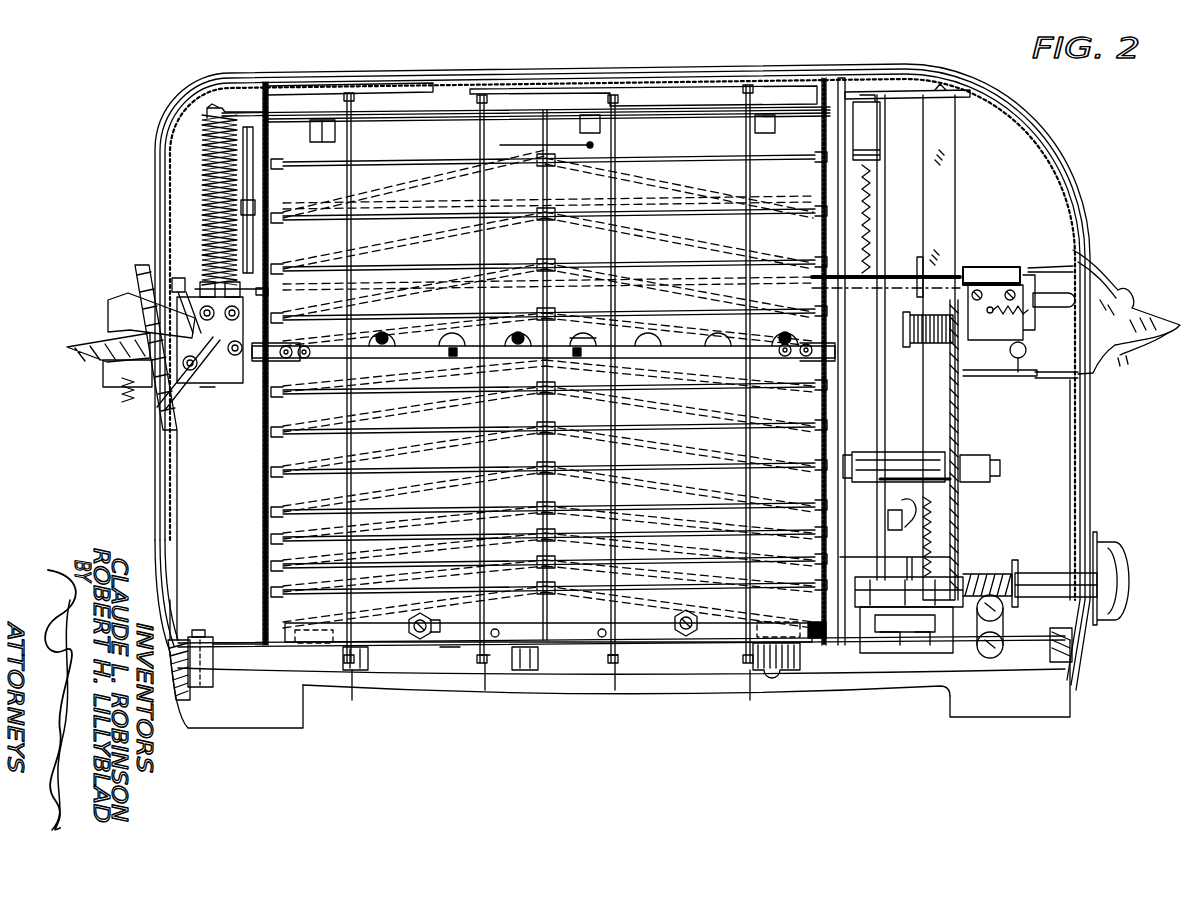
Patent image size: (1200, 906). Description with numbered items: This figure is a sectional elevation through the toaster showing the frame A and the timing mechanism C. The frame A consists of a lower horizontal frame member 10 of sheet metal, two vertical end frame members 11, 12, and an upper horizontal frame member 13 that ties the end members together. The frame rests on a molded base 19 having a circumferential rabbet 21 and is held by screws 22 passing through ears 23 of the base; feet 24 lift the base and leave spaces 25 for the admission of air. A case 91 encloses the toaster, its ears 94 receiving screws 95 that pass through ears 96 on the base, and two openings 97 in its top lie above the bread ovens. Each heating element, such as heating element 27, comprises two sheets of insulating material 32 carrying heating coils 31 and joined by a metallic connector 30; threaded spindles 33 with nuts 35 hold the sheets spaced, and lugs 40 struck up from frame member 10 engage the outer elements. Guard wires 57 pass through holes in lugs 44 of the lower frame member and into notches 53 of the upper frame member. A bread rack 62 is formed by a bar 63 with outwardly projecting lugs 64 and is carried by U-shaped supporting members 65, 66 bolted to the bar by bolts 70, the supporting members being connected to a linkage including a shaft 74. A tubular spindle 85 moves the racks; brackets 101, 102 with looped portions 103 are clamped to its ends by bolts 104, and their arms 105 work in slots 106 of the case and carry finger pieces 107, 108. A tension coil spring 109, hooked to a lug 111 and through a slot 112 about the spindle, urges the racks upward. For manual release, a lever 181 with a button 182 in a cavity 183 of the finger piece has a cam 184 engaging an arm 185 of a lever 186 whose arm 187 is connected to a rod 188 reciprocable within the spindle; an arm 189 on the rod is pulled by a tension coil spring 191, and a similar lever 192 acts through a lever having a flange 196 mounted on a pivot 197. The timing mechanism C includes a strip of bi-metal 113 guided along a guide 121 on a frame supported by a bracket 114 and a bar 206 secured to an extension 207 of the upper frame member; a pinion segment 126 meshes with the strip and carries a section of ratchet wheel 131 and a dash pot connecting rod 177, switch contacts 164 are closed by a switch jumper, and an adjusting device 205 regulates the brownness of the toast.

The lower horizontal frame member 10 is at (657, 648).
The vertical end frame member 11 is at (263, 540).
The vertical end frame member 12 is at (840, 415).
The upper horizontal frame member 13 is at (548, 108).
The base 19 is at (178, 610).
The rabbet 21 is at (237, 642).
The screws 22 is at (358, 672).
The ears 23 is at (370, 660).
The feet 24 is at (270, 729).
The spaces 25 is at (330, 700).
The heating element 27 is at (308, 132).
The metallic connector 30 is at (500, 643).
The heating coils 31 is at (310, 485).
The sheets of heat resisting insulating material 32 is at (300, 455).
The threaded spindles 33 is at (420, 640).
The nuts 35 is at (440, 628).
The lugs 40 is at (316, 628).
The lugs 44 is at (613, 662).
The notches 53 is at (484, 92).
The guard wires 57 is at (338, 246).
The bread rack 62 is at (465, 358).
The bar 63 is at (330, 362).
The lugs 64 is at (388, 333).
The U-shaped supporting member 65 is at (835, 343).
The U-shaped supporting member 66 is at (280, 358).
The bolts 70 is at (300, 360).
The shaft 74 is at (292, 200).
The spindle 85 is at (900, 276).
The case 91 is at (158, 150).
The ears 94 is at (213, 640).
The screws 95 is at (200, 630).
The ears 96 is at (192, 702).
The openings 97 is at (790, 78).
The bracket 101 is at (985, 378).
The bracket 102 is at (205, 385).
The looped portions 103 is at (205, 283).
The bolts 104 is at (213, 296).
The arms 105 is at (192, 335).
The slots 106 is at (150, 380).
The finger piece 107 is at (1140, 354).
The finger piece 108 is at (75, 352).
The tension coil spring 109 is at (203, 186).
The lug 111 is at (208, 106).
The slot 112 is at (243, 278).
The strip of bi-metal 113 is at (870, 653).
The bracket 114 is at (886, 520).
The guide 121 is at (935, 653).
The segment of a pinion 126 is at (888, 484).
The section of a ratchet wheel 131 is at (962, 575).
The switch contacts 164 is at (1000, 656).
The connecting rod 177 is at (925, 525).
The lever 181 is at (230, 386).
The button 182 is at (106, 314).
The cavity 183 is at (100, 366).
The cam 184 is at (165, 420).
The arm 185 is at (205, 395).
The lever 186 is at (125, 388).
The arm 187 is at (172, 288).
The rod 188 is at (270, 293).
The arm 189 is at (1050, 283).
The tension coil spring 191 is at (1012, 318).
The lever 192 is at (1066, 298).
The flange 196 is at (1016, 360).
The pivot 197 is at (1002, 400).
The adjusting device 205 is at (1050, 572).
The bar 206 is at (955, 200).
The extension 207 is at (878, 100).
The frame A is at (450, 652).
The timing mechanism C is at (905, 653).